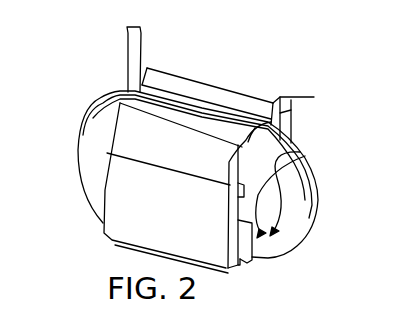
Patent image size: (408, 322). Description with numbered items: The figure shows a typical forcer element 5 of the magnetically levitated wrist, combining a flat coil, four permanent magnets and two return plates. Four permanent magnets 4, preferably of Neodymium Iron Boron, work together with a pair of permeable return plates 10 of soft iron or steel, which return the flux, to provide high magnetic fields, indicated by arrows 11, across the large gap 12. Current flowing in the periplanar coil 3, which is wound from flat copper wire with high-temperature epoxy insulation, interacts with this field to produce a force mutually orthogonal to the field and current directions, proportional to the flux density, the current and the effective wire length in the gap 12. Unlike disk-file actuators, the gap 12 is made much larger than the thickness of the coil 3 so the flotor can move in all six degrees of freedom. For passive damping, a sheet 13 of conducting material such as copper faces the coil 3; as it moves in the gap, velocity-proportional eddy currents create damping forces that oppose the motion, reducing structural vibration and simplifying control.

The periplanar coil 3 is at (316, 207).
The permanent magnets 4 is at (314, 97).
The forcer element 5 is at (60, 70).
The permeable return plates 10 is at (244, 263).
The arrows 11 is at (305, 156).
The gap 12 is at (132, 46).
The sheet of conducting material 13 is at (262, 148).